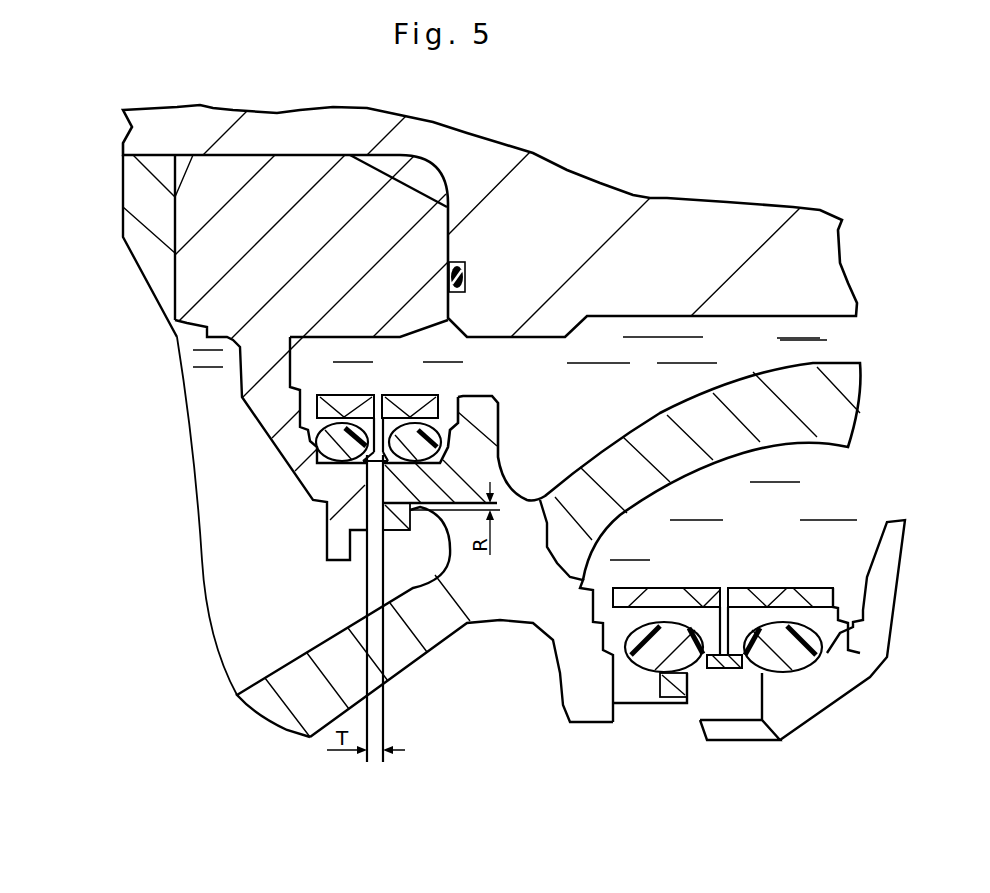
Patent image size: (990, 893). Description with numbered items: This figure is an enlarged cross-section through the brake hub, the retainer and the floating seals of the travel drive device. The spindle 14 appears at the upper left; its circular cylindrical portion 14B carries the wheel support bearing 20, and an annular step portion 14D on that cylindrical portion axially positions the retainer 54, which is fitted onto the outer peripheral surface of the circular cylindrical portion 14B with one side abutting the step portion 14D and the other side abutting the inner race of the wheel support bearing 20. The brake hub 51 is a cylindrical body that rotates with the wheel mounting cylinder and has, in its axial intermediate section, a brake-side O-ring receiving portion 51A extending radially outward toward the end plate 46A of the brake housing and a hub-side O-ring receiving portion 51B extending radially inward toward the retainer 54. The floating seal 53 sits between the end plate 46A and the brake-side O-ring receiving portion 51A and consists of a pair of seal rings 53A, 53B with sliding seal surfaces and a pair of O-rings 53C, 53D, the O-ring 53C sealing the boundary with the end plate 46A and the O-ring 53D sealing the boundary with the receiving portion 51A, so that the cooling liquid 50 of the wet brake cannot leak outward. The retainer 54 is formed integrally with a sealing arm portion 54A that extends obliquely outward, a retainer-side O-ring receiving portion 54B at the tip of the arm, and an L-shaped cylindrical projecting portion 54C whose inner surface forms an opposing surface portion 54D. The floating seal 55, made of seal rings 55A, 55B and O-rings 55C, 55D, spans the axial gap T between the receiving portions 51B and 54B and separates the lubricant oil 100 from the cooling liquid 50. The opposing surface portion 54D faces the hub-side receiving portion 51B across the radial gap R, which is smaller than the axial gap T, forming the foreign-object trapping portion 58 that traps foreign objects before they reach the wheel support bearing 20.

The spindle 14 is at (805, 202).
The circular cylindrical portion 14B is at (208, 125).
The annular step portion 14D is at (502, 257).
The wheel support bearing 20 is at (137, 188).
The end plate 46A is at (840, 687).
The cooling liquid 50 is at (640, 330).
The brake hub 51 is at (742, 403).
The brake-side O-ring receiving portion 51A is at (643, 695).
The hub-side O-ring receiving portion 51B is at (430, 477).
The floating seal 53 is at (796, 621).
The seal ring 53A is at (773, 600).
The seal ring 53B is at (667, 600).
The O-ring 53C is at (793, 650).
The O-ring 53D is at (662, 668).
The retainer 54 is at (263, 255).
The sealing arm portion 54A is at (283, 445).
The retainer-side O-ring receiving portion 54B is at (333, 482).
The cylindrical projecting portion 54C is at (395, 516).
The opposing surface portion 54D is at (412, 522).
The floating seal 55 is at (370, 257).
The seal ring 55A is at (410, 407).
The seal ring 55B is at (345, 410).
The O-ring 55C is at (440, 430).
The O-ring 55D is at (352, 430).
The foreign-object trapping portion 58 is at (398, 535).
The lubricant oil 100 is at (220, 558).